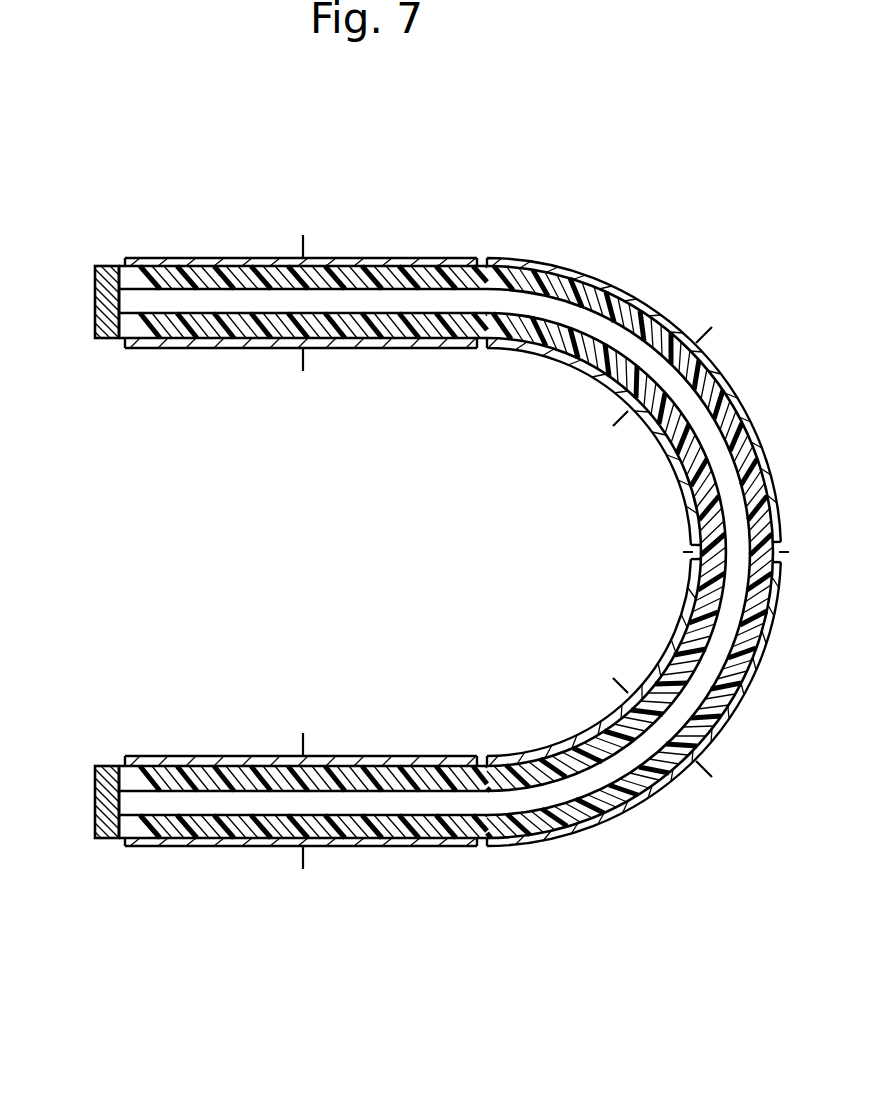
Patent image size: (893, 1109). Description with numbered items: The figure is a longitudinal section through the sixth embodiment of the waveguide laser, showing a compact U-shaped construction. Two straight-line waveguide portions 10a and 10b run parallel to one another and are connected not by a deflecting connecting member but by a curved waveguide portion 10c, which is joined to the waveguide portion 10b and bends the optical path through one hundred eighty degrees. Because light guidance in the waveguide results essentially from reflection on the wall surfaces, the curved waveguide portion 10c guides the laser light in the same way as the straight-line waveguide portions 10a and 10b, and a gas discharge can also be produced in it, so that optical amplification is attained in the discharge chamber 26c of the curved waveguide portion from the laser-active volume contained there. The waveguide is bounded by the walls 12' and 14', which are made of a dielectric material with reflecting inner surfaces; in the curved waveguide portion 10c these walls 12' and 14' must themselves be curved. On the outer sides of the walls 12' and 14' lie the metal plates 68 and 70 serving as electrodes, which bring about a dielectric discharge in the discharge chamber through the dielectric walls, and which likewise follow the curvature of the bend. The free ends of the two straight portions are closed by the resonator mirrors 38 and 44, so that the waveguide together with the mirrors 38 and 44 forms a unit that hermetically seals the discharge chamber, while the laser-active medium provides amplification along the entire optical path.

The straight-line waveguide portion 10a is at (337, 283).
The straight-line waveguide portion 10b is at (343, 825).
The curved waveguide portion 10c is at (603, 308).
The discharge chamber of the curved waveguide portion 26c is at (740, 468).
The wall 14' is at (313, 523).
The wall 12' is at (313, 552).
The metal plate 70 is at (455, 267).
The metal plate 68 is at (443, 345).
The resonator mirror 38 is at (106, 265).
The resonator mirror 44 is at (105, 838).